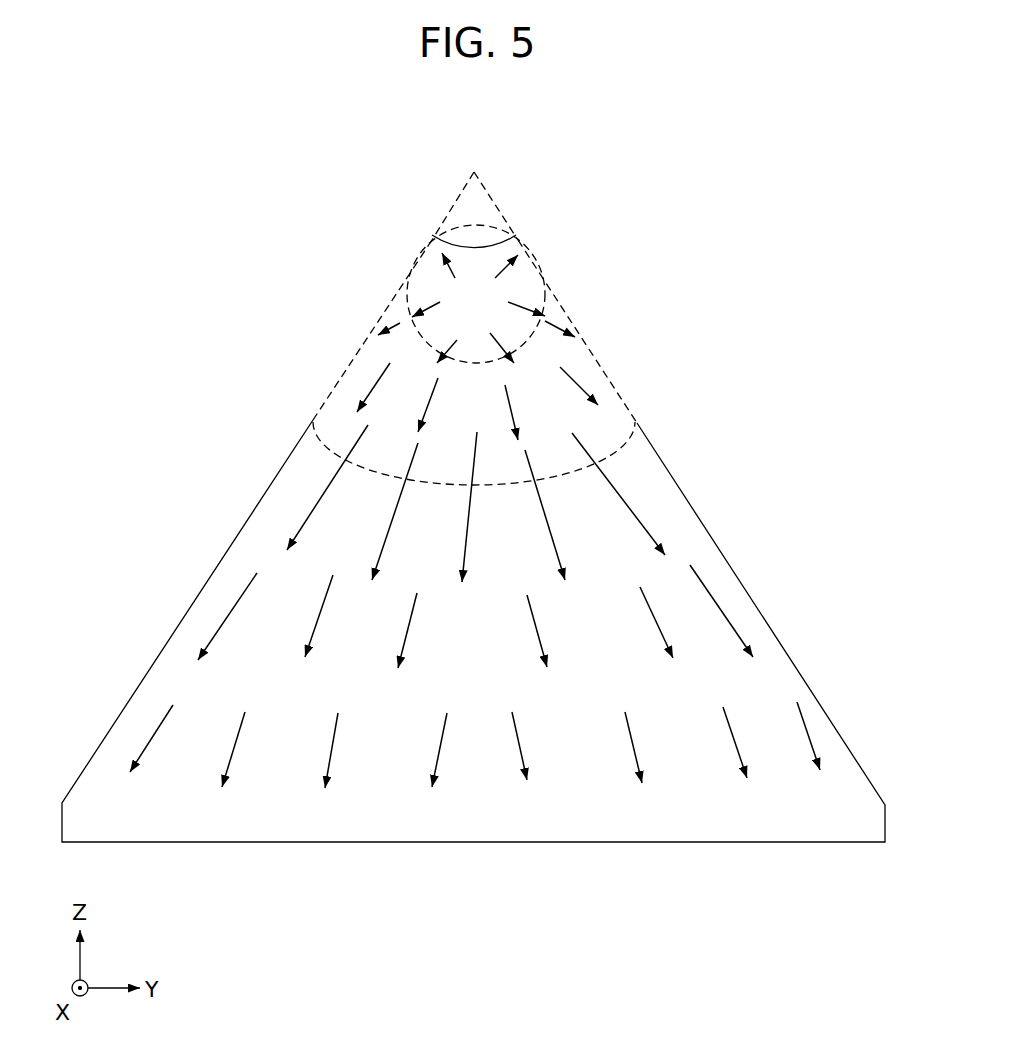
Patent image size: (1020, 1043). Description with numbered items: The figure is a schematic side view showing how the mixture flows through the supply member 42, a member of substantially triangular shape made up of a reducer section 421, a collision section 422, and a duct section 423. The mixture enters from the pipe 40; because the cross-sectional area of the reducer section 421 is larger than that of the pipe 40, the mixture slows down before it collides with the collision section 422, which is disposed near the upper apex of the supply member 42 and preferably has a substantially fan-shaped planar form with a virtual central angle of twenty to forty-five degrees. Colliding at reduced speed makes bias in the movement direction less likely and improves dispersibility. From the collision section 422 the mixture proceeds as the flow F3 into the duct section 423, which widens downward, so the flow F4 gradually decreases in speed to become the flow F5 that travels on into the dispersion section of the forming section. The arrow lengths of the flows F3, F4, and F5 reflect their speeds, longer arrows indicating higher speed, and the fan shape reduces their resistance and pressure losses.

The pipe 40 is at (407, 302).
The supply member 42 is at (660, 195).
The reducer section 421 is at (590, 378).
The collision section 422 is at (557, 297).
The duct section 423 is at (793, 657).
The flow F3 is at (376, 383).
The flow F4 is at (313, 507).
The flow F5 is at (228, 613).